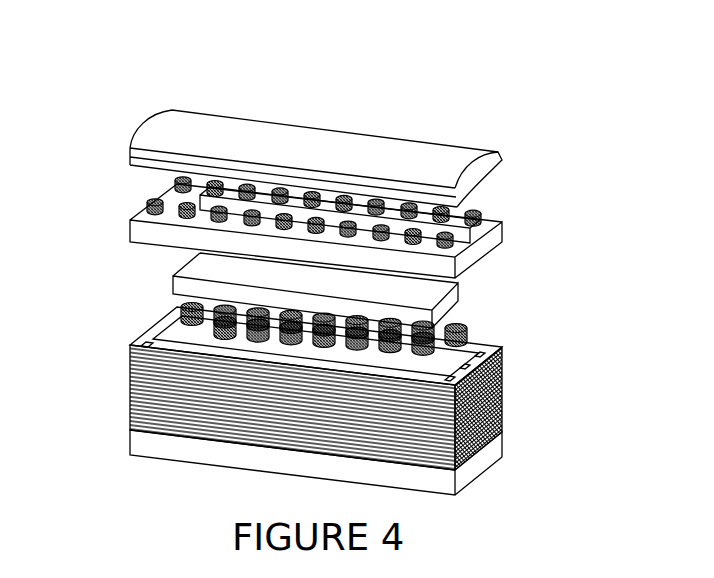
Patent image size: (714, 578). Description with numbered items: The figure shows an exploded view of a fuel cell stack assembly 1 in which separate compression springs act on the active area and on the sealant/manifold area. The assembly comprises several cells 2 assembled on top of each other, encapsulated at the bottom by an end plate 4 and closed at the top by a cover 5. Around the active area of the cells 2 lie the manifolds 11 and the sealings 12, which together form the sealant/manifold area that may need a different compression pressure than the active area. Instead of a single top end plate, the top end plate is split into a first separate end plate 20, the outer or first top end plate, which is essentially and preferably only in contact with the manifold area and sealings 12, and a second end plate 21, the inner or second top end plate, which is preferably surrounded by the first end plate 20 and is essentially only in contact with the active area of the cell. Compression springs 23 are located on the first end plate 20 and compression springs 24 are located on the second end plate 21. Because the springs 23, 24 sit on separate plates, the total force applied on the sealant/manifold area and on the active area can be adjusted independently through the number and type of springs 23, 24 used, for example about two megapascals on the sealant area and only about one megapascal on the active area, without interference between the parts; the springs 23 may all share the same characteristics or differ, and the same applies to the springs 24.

The stack assembly 1 is at (118, 74).
The cells 2 is at (331, 380).
The end plate 4 is at (492, 448).
The cover 5 is at (378, 150).
The manifolds 11 is at (167, 320).
The sealings 12 is at (500, 345).
The first separate end plate 20 is at (490, 242).
The second end plate 21 is at (458, 300).
The compression springs 23 is at (468, 205).
The compression springs 24 is at (443, 330).